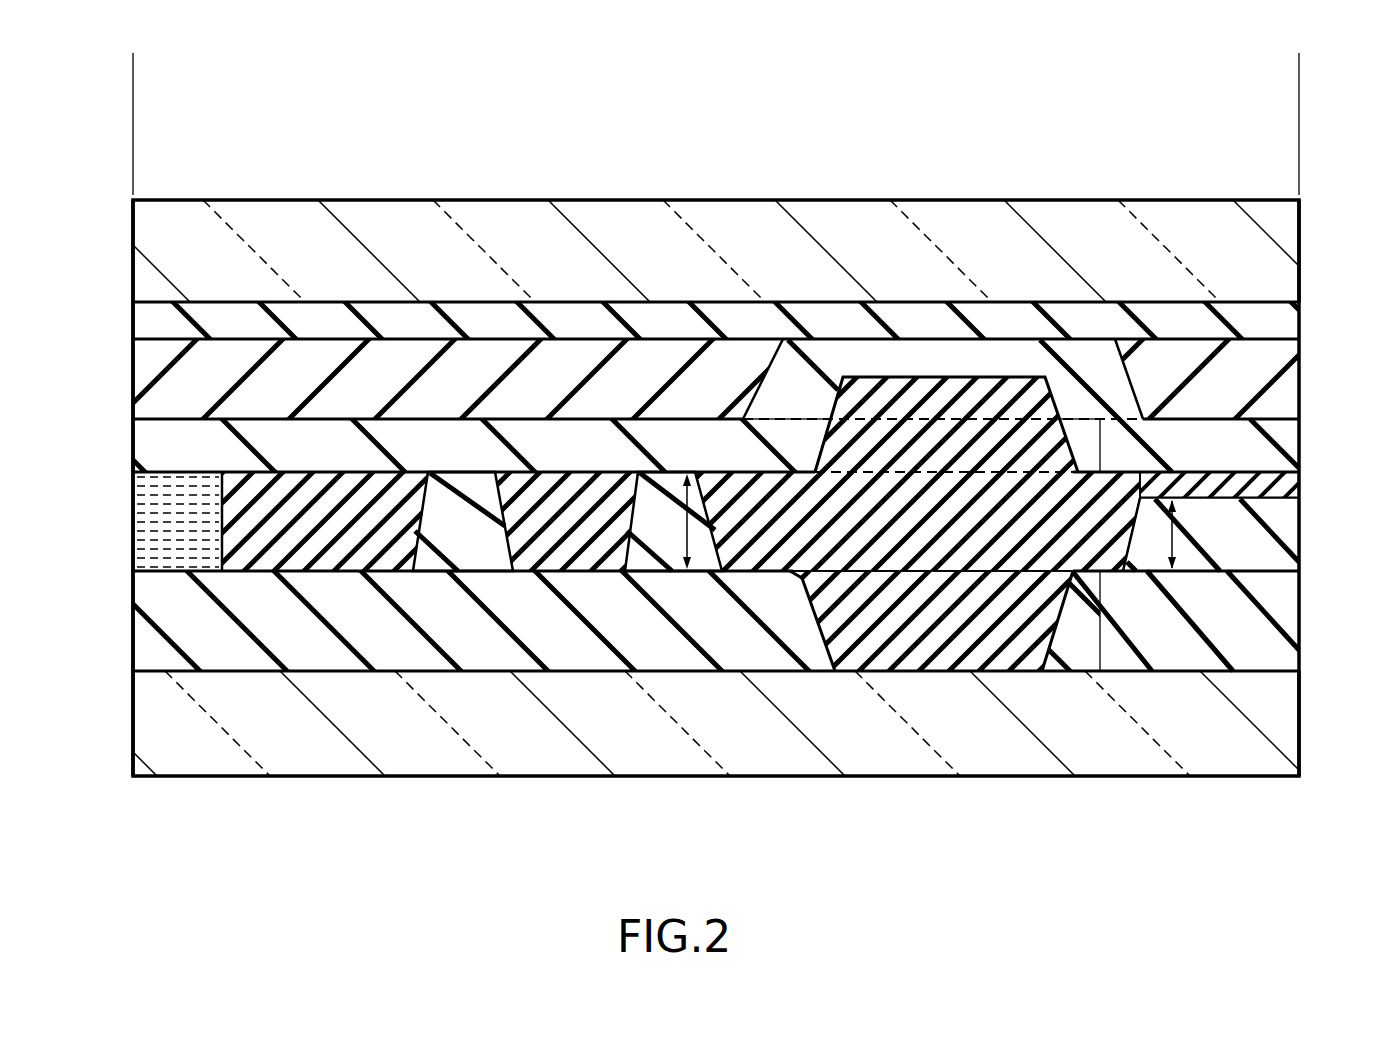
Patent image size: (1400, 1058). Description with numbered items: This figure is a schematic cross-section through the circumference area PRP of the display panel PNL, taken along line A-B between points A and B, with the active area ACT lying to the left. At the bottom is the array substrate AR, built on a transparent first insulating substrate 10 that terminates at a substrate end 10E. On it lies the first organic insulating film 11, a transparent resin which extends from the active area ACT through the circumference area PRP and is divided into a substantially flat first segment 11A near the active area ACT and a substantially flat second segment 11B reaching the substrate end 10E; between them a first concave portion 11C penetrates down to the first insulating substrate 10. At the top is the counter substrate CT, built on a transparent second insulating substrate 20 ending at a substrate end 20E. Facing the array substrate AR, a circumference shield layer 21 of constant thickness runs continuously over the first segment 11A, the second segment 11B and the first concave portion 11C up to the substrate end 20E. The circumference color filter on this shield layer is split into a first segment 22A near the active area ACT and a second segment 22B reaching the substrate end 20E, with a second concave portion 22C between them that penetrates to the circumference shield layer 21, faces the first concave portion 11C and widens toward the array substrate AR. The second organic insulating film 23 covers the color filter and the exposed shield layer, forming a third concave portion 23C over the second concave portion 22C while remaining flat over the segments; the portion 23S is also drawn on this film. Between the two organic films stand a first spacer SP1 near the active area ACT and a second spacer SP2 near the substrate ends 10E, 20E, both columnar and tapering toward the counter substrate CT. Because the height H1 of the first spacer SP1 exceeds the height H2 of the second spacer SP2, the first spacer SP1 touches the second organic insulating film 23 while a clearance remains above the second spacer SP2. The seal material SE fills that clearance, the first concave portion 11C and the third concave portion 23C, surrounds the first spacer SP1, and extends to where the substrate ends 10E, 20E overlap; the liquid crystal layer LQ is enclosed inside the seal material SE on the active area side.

The second insulating substrate 20 is at (1235, 220).
The substrate end of the counter substrate 20E is at (1303, 252).
The circumference shield layer 21 is at (1284, 318).
The first segment of the circumference color filter 22A is at (417, 350).
The second segment of the circumference color filter 22B is at (1162, 366).
The second concave portion 22C is at (1005, 363).
The second organic insulating film 23 is at (1286, 450).
The overcoat layer portion 23S is at (1243, 487).
The third concave portion 23C is at (978, 450).
The liquid crystal layer LQ is at (140, 485).
The seal material SE is at (258, 513).
The first spacer SP1 is at (433, 522).
The second spacer SP2 is at (1273, 562).
The height of the first spacer H1 is at (702, 527).
The height of the second spacer H2 is at (1152, 545).
The first organic insulating film 11 is at (1303, 608).
The first segment of the first organic insulating film 11A is at (763, 650).
The second segment of the first organic insulating film 11B is at (1195, 655).
The first concave portion 11C is at (876, 616).
The first insulating substrate 10 is at (1268, 765).
The substrate end of the array substrate 10E is at (1303, 728).
The counter substrate CT is at (128, 320).
The array substrate AR is at (128, 718).
The active area ACT is at (126, 73).
The circumference area PRP is at (1292, 73).
The display panel PNL is at (109, 821).
The line A-B A is at (129, 803).
The line A- B is at (1307, 803).